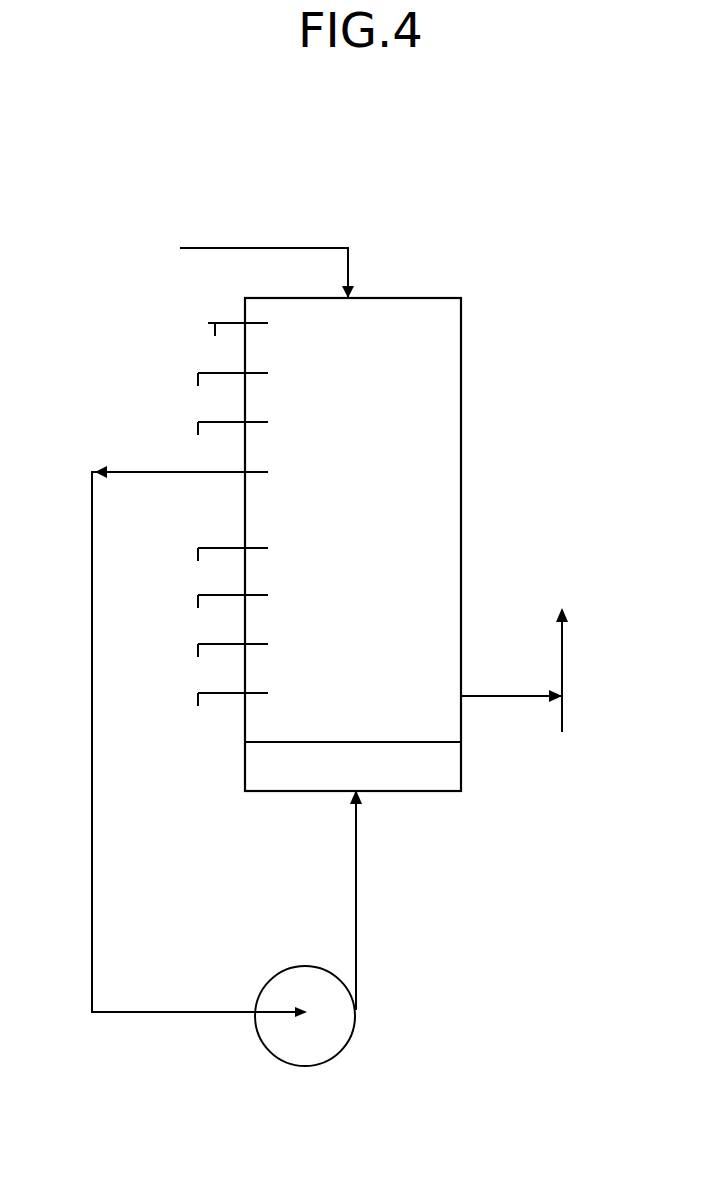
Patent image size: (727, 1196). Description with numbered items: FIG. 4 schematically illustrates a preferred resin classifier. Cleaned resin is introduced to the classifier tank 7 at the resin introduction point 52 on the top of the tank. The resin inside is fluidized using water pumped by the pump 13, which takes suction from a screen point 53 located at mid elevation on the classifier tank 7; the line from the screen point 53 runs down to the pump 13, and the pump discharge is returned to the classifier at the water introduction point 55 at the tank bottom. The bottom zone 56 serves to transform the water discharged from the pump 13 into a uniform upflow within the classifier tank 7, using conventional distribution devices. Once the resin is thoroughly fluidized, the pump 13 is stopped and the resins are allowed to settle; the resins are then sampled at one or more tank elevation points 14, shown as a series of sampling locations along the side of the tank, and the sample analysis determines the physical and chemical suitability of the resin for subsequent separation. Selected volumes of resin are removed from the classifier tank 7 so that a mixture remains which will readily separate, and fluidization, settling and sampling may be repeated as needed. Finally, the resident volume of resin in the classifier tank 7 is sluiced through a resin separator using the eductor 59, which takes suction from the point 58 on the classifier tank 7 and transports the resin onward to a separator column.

The classifier tank 7 is at (357, 527).
The pump 13 is at (340, 1016).
The tank elevation points 14 is at (177, 505).
The resin introduction point 52 is at (261, 249).
The screen point 53 is at (172, 736).
The water introduction point 55 is at (376, 900).
The bottom zone 56 is at (353, 766).
The suction point 58 is at (511, 678).
The eductor 59 is at (585, 670).